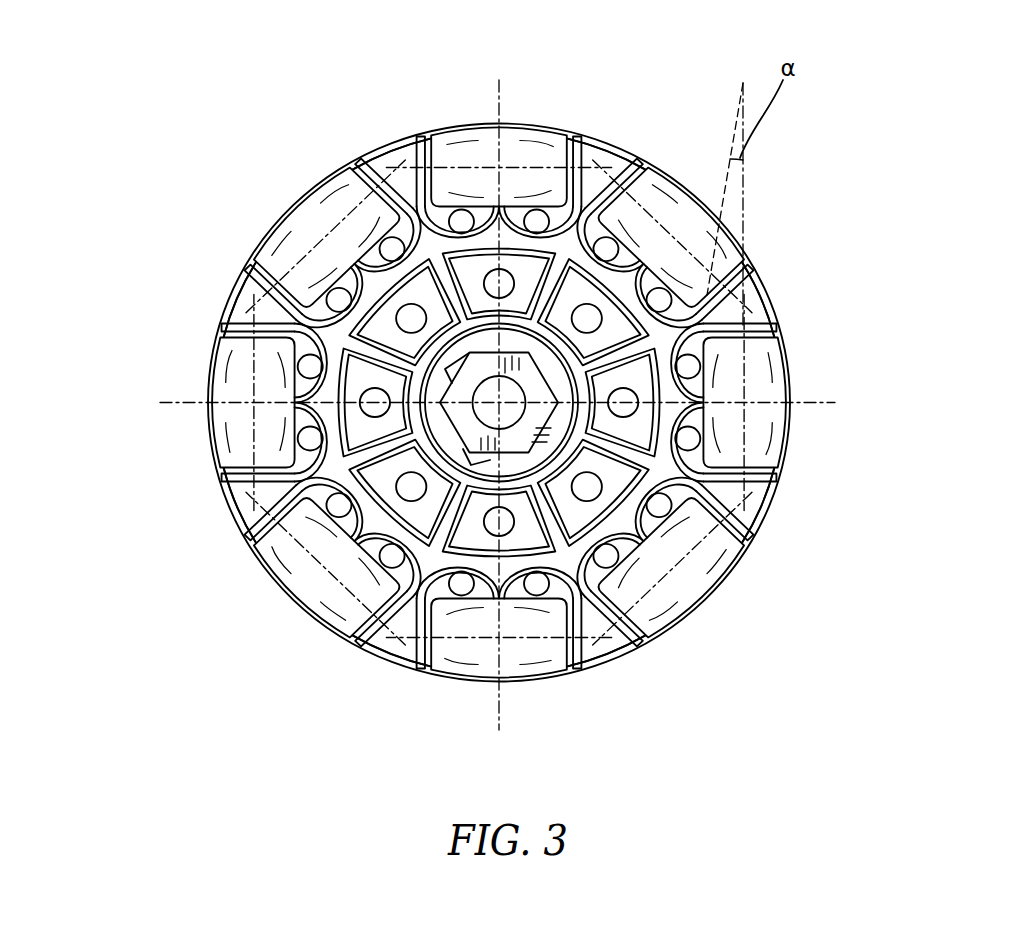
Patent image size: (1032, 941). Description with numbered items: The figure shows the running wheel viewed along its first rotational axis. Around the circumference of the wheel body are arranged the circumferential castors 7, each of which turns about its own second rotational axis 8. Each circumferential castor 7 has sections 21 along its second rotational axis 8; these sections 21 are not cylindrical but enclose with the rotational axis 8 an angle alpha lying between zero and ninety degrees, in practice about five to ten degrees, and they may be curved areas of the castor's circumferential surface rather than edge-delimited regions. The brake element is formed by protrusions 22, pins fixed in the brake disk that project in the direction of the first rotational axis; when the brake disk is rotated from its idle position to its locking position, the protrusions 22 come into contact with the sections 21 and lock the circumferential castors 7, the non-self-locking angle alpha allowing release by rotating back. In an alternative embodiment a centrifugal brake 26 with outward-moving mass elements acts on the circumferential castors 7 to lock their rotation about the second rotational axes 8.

The circumferential castor 7 is at (328, 198).
The second rotational axis 8 is at (608, 180).
The section 21 is at (780, 370).
The protrusion 22 is at (657, 507).
The centrifugal brake 26 is at (320, 503).